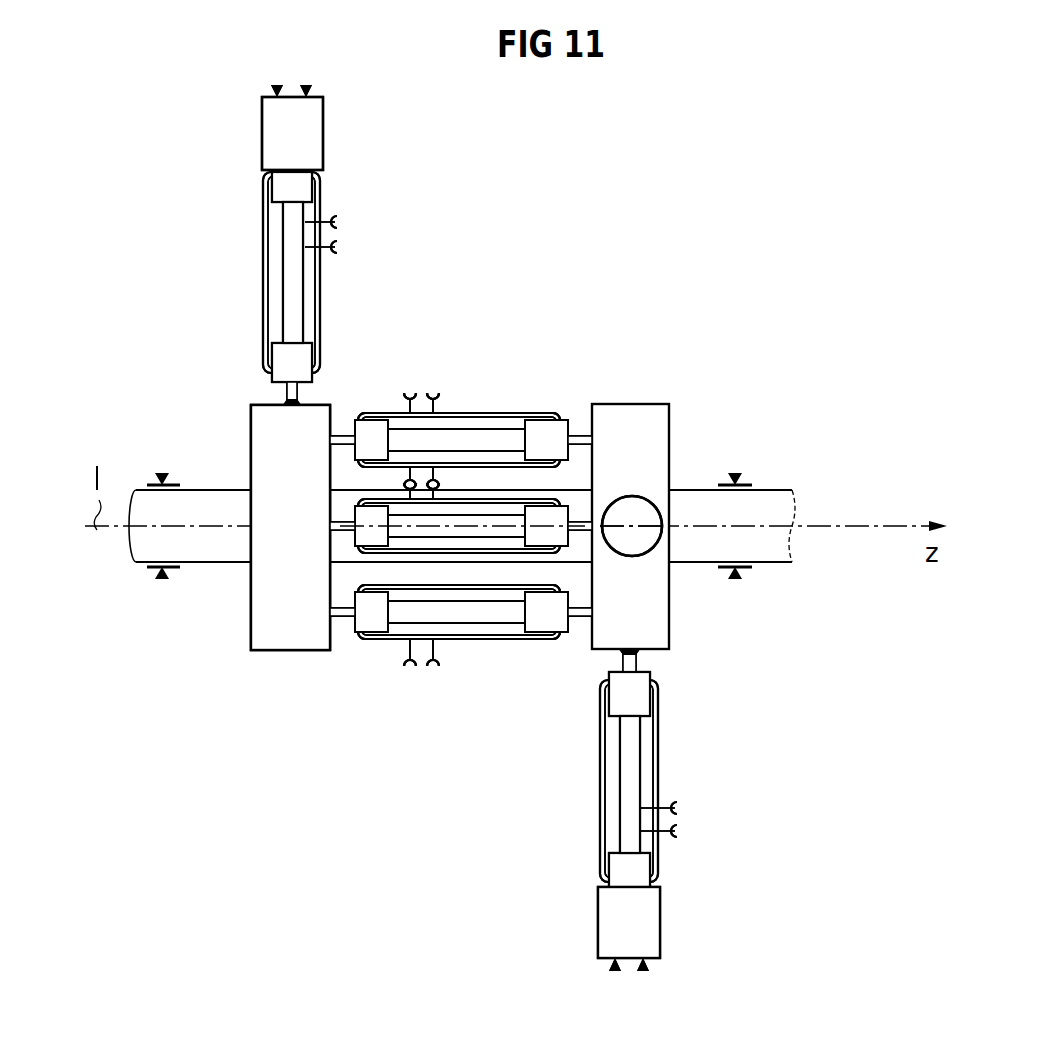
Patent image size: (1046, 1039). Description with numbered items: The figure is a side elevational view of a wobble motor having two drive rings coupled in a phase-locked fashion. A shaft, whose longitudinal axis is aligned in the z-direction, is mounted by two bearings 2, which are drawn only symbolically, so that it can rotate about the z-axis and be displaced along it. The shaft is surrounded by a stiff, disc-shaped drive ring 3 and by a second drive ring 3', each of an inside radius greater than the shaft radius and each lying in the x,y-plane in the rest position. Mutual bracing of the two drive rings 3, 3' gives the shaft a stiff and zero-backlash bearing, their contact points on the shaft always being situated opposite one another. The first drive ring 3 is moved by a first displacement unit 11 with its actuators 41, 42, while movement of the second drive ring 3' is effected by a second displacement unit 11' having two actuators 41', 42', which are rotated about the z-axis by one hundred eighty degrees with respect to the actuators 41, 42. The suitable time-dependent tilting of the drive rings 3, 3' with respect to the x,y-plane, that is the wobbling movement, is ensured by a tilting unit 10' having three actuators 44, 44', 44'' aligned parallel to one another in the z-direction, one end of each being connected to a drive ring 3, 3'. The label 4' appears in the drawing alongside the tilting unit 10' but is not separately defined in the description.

The bearings 2 is at (156, 459).
The drive ring 3 is at (630, 494).
The second drive ring 3' is at (290, 560).
The piezo actuator 4' is at (459, 537).
The tilting unit 10' is at (459, 537).
The first displacement unit 11 is at (714, 680).
The second displacement unit 11' is at (292, 378).
The actuator 41 is at (714, 810).
The actuator 41' is at (378, 245).
The actuator 42 is at (676, 473).
The actuator 42' is at (210, 538).
The actuator 44 is at (461, 680).
The actuator 44' is at (447, 606).
The actuator 44'' is at (473, 392).